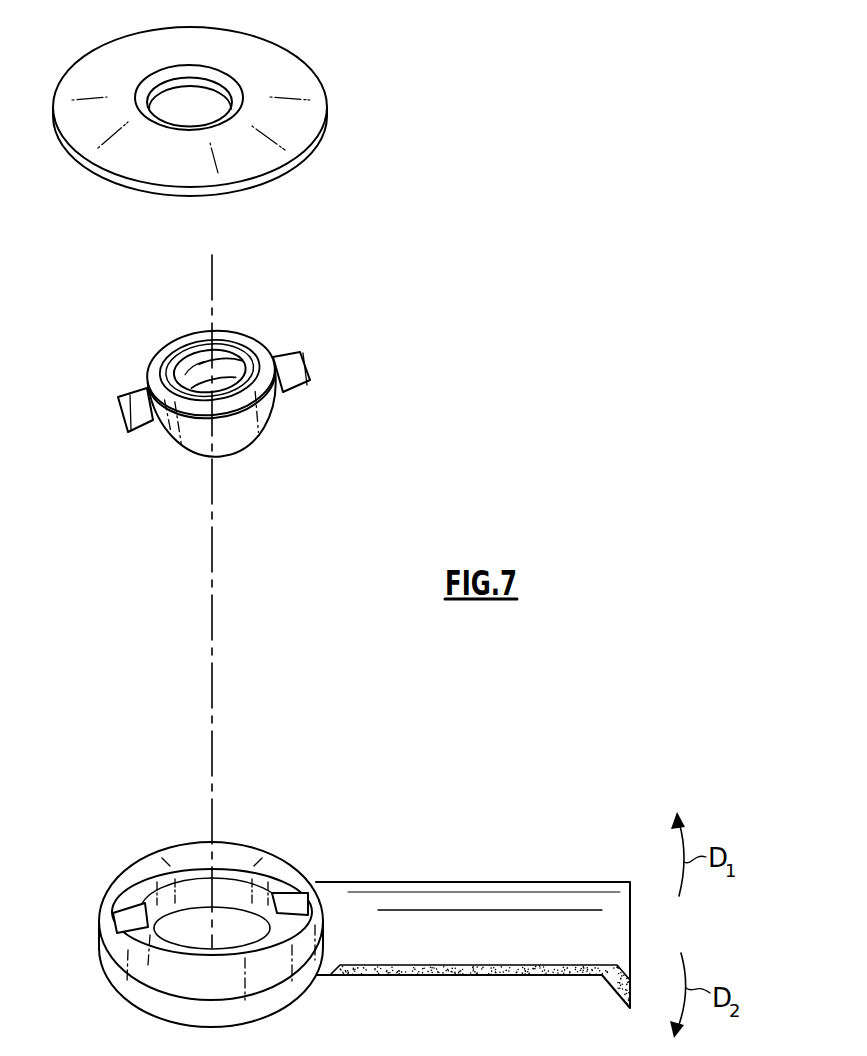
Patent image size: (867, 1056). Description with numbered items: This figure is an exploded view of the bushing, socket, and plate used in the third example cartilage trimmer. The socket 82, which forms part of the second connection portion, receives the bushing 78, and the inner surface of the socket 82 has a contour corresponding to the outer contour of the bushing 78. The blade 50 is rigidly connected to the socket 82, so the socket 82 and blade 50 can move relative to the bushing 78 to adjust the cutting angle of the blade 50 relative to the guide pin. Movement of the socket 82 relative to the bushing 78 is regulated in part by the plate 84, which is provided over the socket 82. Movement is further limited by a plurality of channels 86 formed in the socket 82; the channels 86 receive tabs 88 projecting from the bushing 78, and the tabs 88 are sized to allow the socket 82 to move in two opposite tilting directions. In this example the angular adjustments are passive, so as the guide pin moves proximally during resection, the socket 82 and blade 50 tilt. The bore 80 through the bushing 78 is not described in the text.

The blade 50 is at (503, 903).
The bushing 78 is at (262, 360).
The threaded hole of nut 80 is at (223, 360).
The socket 82 is at (147, 868).
The plate 84 is at (292, 83).
The channels 86 is at (127, 917).
The tabs 88 is at (291, 367).